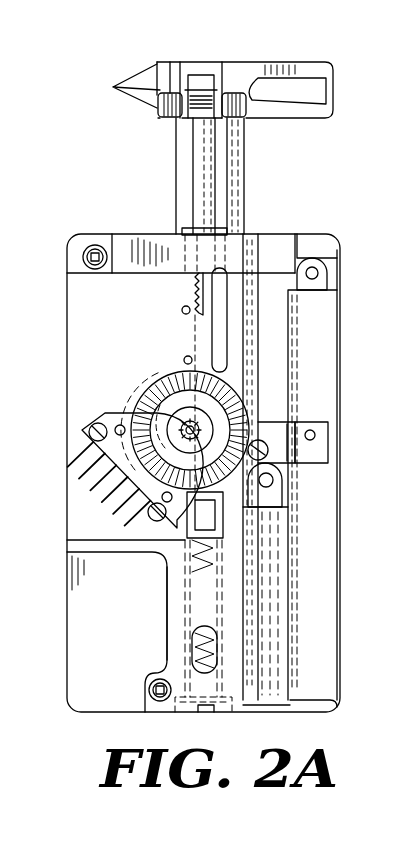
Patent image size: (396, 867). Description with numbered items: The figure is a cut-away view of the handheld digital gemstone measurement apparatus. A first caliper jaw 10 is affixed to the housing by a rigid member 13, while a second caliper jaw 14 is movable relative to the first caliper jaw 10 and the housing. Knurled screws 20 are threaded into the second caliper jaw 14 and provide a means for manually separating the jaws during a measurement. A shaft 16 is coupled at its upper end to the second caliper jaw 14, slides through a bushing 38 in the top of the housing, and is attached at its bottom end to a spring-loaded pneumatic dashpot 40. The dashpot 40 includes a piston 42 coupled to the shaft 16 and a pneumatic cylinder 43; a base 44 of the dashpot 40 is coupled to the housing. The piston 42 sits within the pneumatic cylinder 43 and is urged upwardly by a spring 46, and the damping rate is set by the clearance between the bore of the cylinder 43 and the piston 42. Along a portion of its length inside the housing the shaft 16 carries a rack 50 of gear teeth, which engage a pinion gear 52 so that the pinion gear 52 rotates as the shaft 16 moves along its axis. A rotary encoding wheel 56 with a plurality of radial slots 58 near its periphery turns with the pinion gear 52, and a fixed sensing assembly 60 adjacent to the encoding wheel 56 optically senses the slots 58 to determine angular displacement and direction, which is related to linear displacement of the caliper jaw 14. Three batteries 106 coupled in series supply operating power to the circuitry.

The first caliper jaw 10 is at (219, 93).
The rigid member 13 is at (244, 205).
The second caliper jaw 14 is at (292, 114).
The shaft 16 is at (208, 171).
The knurled screws 20 is at (240, 108).
The bushing 38 is at (185, 228).
The spring-loaded pneumatic dashpot 40 is at (183, 586).
The piston 42 is at (183, 530).
The pneumatic cylinder 43 is at (185, 608).
The base 44 is at (185, 712).
The spring 46 is at (195, 655).
The rack 50 is at (197, 298).
The pinion gear 52 is at (190, 421).
The rotary encoding wheel 56 is at (135, 402).
The radial slots 58 is at (148, 388).
The sensing assembly 60 is at (82, 424).
The batteries 106 is at (320, 600).